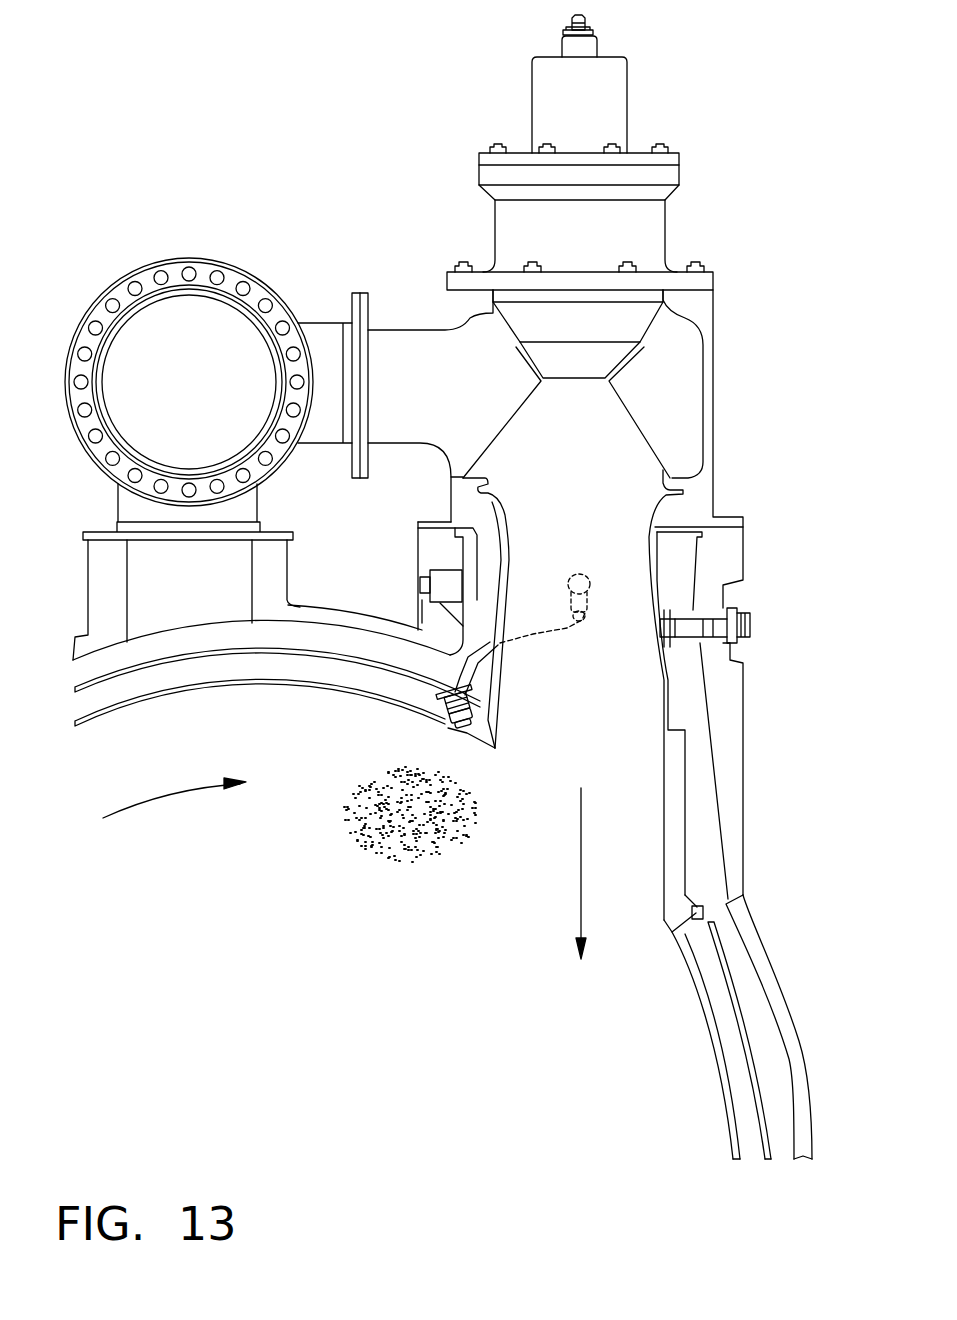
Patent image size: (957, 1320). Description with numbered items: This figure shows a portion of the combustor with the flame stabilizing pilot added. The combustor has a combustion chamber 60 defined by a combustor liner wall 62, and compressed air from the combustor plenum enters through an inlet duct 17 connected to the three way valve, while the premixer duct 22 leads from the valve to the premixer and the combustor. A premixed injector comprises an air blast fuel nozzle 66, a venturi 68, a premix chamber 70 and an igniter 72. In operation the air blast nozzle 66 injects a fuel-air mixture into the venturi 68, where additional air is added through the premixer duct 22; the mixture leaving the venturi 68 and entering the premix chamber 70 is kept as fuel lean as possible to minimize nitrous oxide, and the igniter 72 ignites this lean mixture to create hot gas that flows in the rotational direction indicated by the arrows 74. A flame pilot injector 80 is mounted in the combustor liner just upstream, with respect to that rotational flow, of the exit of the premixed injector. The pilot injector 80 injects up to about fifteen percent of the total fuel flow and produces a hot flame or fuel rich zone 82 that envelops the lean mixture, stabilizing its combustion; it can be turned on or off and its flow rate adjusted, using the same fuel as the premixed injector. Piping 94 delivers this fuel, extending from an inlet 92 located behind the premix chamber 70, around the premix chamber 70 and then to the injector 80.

The inlet duct 17 is at (228, 570).
The premixer duct 22 is at (323, 335).
The combustion chamber 60 is at (373, 957).
The combustor liner wall 62 is at (697, 909).
The air blast fuel nozzle 66 is at (645, 233).
The venturi 68 is at (596, 438).
The premix chamber 70 is at (630, 664).
The igniter 72 is at (753, 617).
The arrows 74 is at (178, 797).
The flame pilot injector 80 is at (467, 710).
The fuel rich zone 82 is at (472, 813).
The inlet 92 is at (590, 573).
The piping 94 is at (525, 640).